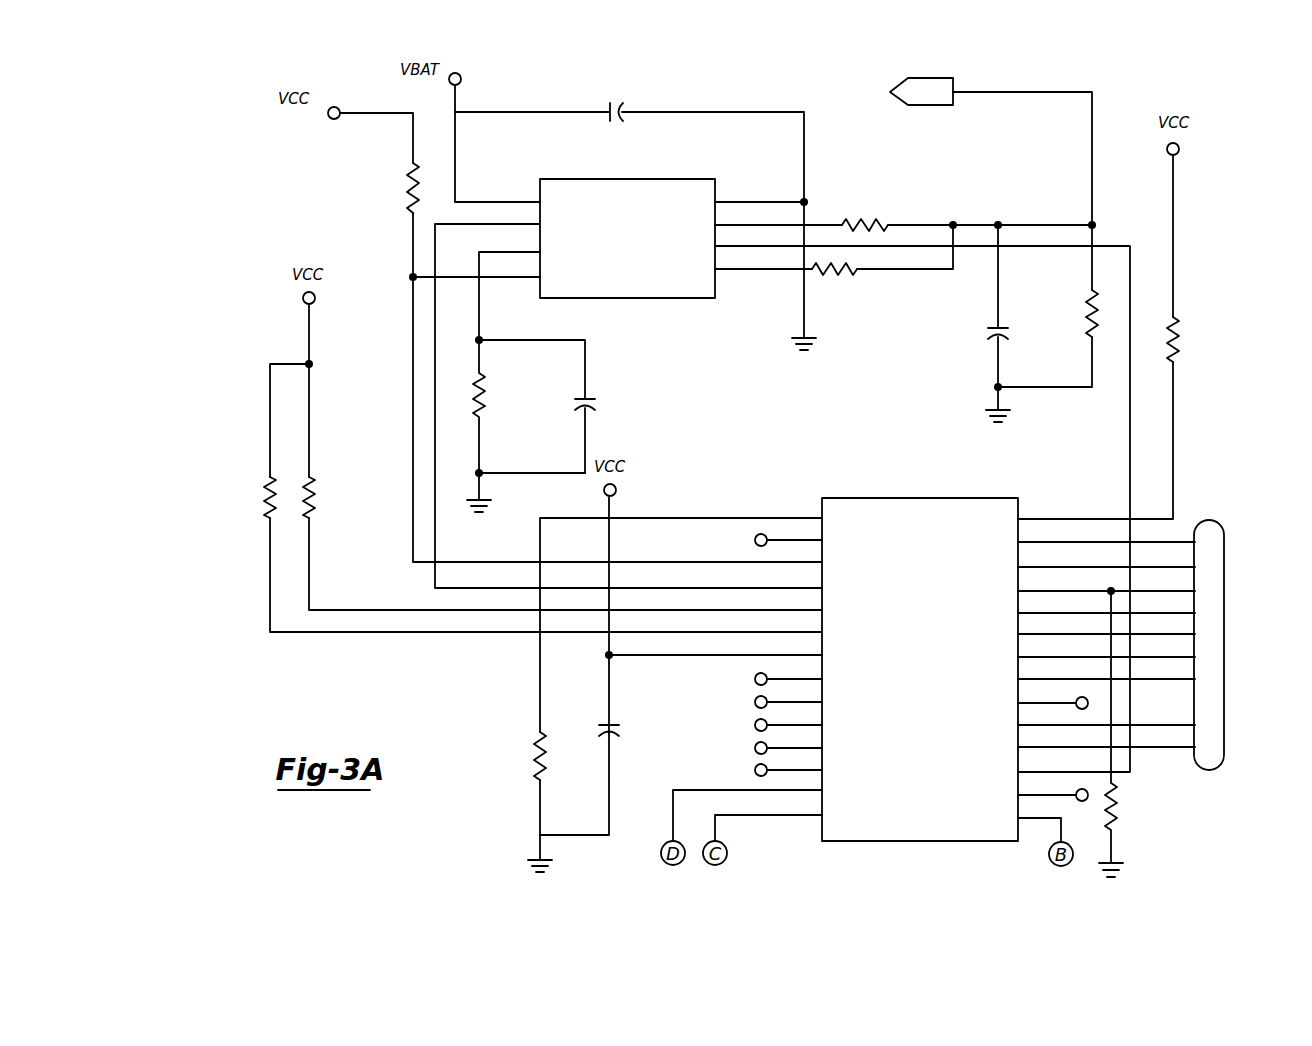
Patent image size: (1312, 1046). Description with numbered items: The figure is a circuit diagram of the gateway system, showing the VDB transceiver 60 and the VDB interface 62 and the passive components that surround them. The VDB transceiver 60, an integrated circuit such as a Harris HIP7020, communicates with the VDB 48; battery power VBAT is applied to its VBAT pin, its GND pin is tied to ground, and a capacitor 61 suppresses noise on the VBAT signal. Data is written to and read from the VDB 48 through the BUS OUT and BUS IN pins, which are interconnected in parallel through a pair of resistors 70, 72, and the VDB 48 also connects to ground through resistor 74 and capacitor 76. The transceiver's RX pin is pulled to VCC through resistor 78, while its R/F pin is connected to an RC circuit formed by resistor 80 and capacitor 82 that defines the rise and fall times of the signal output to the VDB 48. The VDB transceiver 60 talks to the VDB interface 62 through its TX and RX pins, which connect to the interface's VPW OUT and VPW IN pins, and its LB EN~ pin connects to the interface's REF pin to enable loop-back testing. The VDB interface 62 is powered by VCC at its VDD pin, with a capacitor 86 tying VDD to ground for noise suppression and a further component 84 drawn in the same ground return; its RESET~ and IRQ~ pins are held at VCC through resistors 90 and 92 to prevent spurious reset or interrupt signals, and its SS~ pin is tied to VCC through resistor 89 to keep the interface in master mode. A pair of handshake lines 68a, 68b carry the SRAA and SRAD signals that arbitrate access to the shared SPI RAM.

The VDB 48 is at (1018, 92).
The VDB transceiver 60 is at (625, 298).
The capacitor 61 is at (630, 118).
The VDB interface 62 is at (888, 498).
The handshake line 68a is at (1180, 725).
The handshake line 68b is at (1143, 748).
The resistor 70 is at (860, 218).
The resistor 72 is at (824, 276).
The resistor 74 is at (1086, 306).
The capacitor 76 is at (988, 338).
The resistor 78 is at (411, 176).
The resistor 80 is at (486, 408).
The capacitor 82 is at (594, 404).
The resistor 84 is at (534, 760).
The capacitor 86 is at (612, 730).
The resistor 89 is at (1182, 336).
The resistor 90 is at (314, 496).
The resistor 92 is at (266, 484).